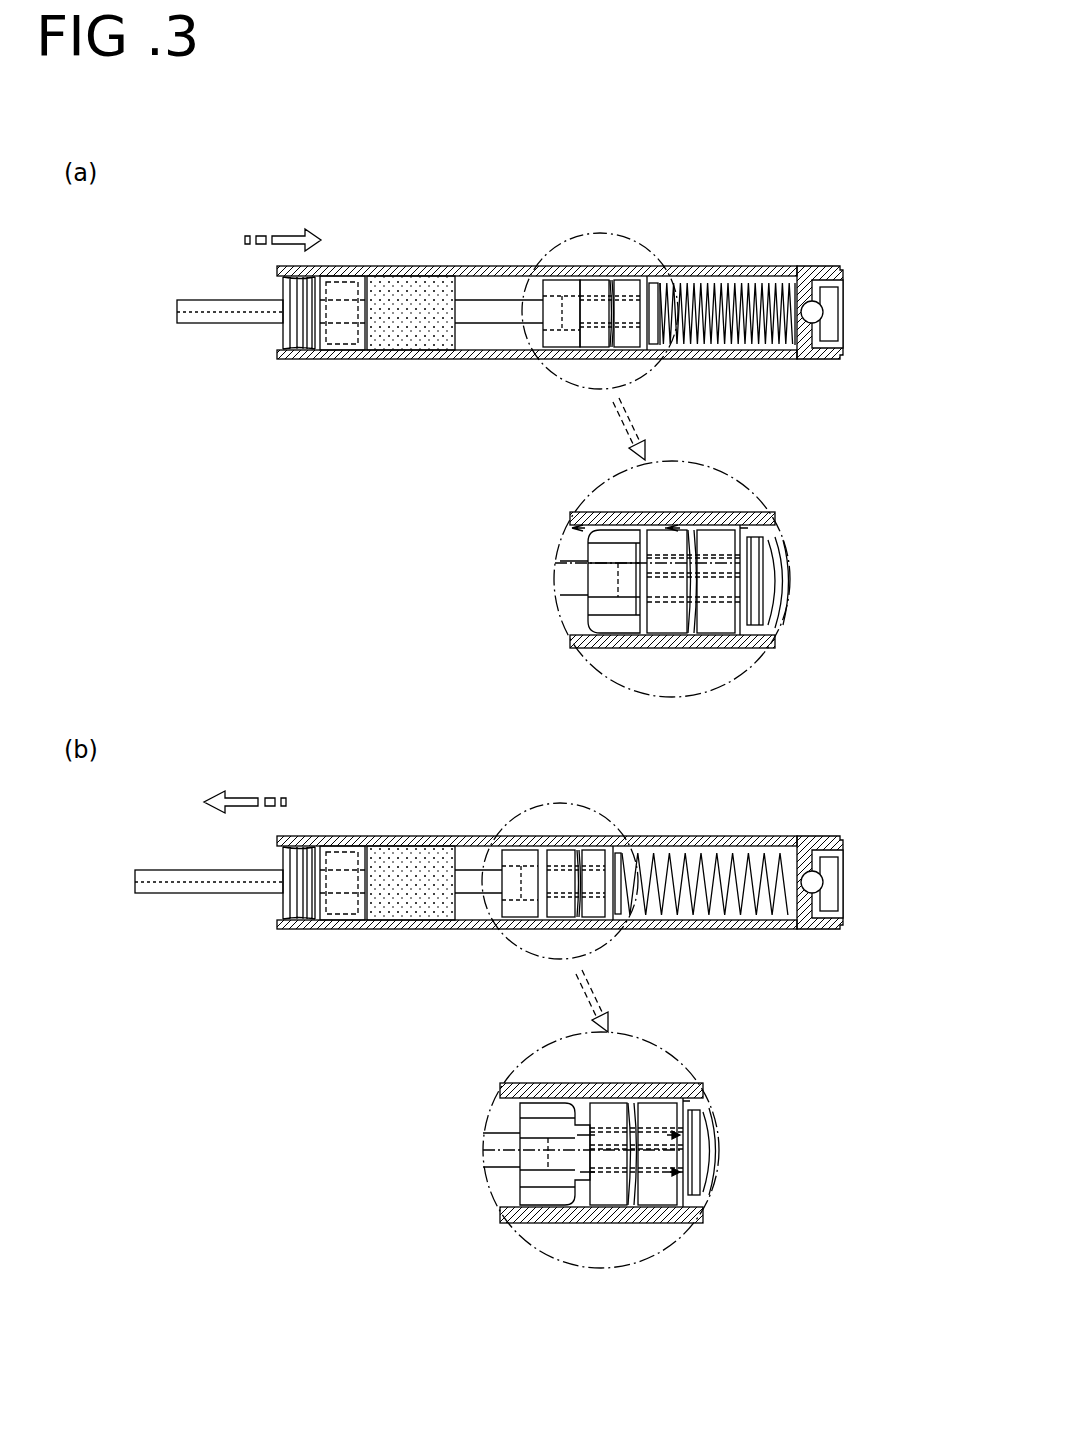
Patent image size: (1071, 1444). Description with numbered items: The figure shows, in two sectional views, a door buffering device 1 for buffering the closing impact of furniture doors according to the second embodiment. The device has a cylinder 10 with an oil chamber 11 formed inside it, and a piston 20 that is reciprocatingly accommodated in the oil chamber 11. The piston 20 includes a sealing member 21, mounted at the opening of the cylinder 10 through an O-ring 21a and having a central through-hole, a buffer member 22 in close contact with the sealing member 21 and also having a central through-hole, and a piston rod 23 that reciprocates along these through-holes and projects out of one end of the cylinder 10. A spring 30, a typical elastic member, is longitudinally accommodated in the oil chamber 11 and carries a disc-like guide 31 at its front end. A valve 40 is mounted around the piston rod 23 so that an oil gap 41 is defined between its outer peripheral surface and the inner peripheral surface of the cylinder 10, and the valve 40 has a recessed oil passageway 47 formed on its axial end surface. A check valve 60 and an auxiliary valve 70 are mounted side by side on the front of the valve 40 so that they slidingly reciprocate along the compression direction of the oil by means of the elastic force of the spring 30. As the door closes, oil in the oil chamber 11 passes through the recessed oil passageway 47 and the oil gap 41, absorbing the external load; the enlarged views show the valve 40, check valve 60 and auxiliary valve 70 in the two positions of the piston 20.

The door buffering device 1 is at (832, 213).
The cylinder 10 is at (738, 264).
The oil chamber 11 is at (649, 279).
The piston 20 is at (244, 334).
The sealing member 21 is at (352, 280).
The O-ring 21a is at (300, 340).
The buffer member 22 is at (408, 280).
The piston rod 23 is at (190, 299).
The spring 30 is at (780, 352).
The guide 31 is at (654, 343).
The valve 40 is at (548, 352).
The oil gap 41 is at (560, 282).
The recessed oil passageway 47 is at (650, 524).
The check valve 60 is at (596, 282).
The auxiliary valve 70 is at (610, 350).